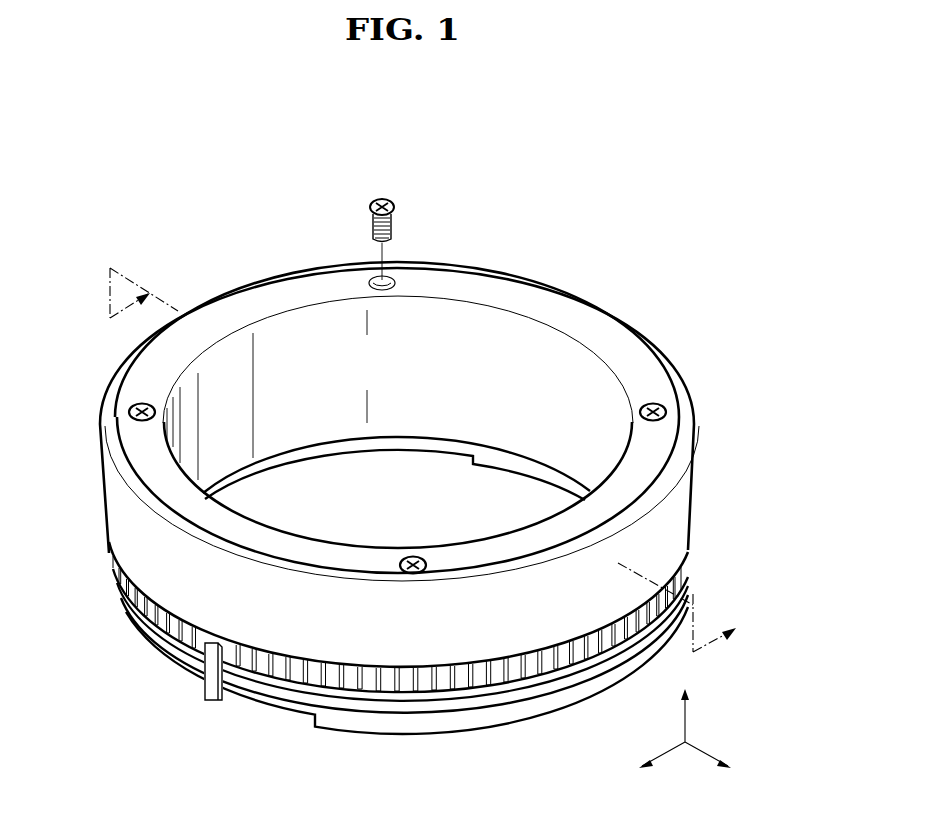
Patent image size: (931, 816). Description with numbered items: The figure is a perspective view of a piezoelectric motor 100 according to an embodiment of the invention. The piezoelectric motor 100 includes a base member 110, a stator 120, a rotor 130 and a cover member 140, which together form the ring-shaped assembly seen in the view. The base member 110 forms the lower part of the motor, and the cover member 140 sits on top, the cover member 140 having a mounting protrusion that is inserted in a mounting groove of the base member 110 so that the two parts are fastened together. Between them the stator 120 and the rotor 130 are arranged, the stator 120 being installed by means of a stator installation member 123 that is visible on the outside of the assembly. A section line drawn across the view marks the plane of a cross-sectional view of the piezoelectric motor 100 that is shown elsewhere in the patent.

The piezoelectric motor 100 is at (234, 232).
The base member 110 is at (443, 720).
The stator 120 is at (500, 680).
The stator installation member 123 is at (213, 694).
The rotor 130 is at (690, 491).
The cover member 140 is at (494, 297).